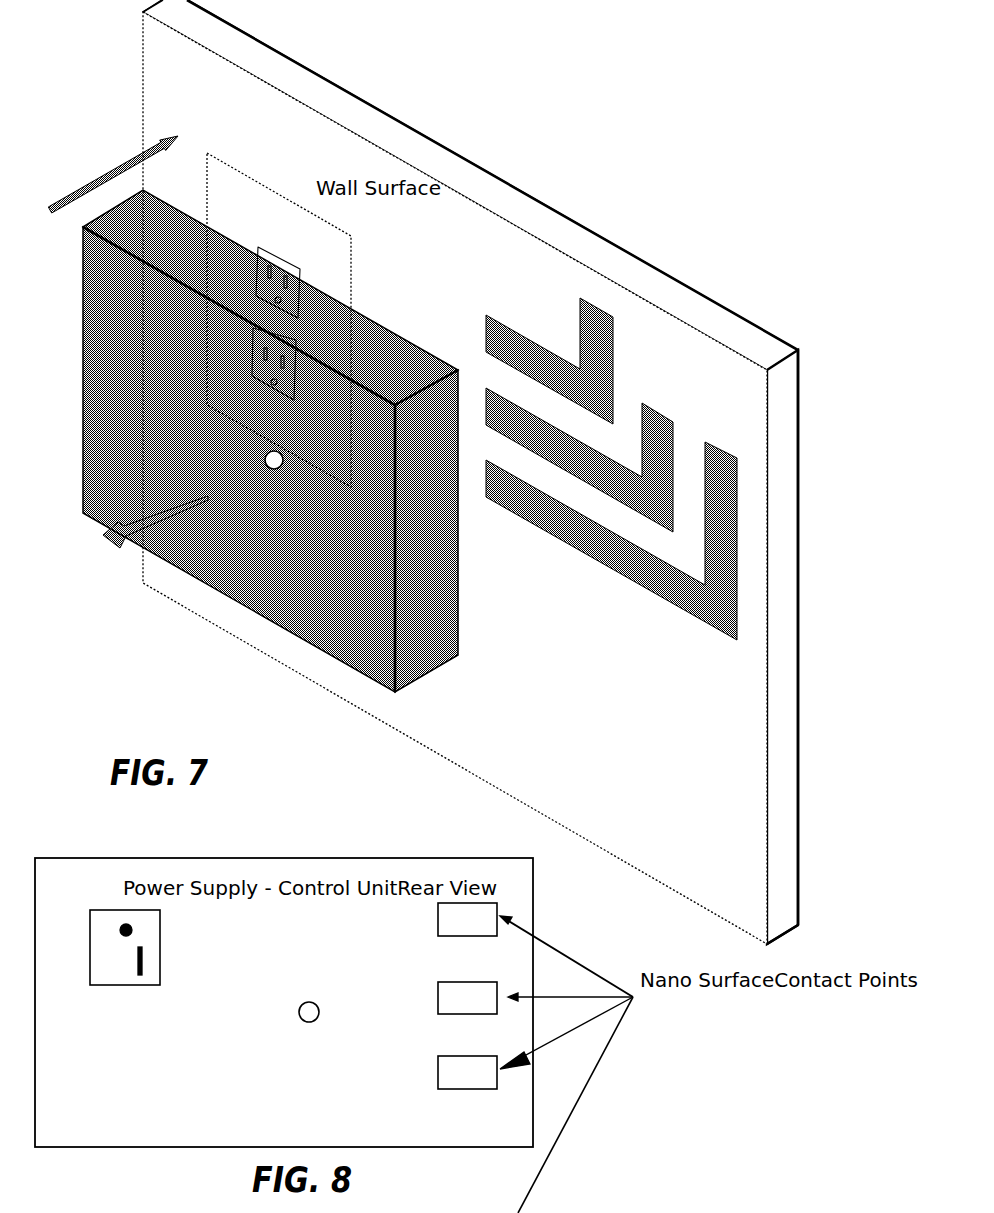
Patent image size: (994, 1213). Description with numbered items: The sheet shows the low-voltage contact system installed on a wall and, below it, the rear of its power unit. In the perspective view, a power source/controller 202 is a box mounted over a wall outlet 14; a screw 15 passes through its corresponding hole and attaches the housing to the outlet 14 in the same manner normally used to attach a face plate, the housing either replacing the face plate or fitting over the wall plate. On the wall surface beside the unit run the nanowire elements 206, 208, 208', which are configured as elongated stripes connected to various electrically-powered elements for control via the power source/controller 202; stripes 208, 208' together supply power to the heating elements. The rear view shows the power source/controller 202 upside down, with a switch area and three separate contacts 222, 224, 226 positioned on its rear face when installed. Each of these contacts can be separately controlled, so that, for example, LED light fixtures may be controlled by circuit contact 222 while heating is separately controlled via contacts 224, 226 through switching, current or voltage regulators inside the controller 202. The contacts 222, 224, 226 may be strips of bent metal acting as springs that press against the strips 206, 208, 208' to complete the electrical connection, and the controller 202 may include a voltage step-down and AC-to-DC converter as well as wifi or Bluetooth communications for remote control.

In FIG. 8, the outlet 14 is at (187, 968).
In FIG. 7, the screw 15 is at (118, 553).
In FIG. 7, the power source/controller 202 is at (433, 633).
In FIG. 8, the power source/controller 202 is at (202, 1148).
In FIG. 7, the nanowire element 206 is at (675, 606).
In FIG. 7, the nanowire element 208 is at (622, 456).
In FIG. 7, the nanowire element 208' is at (596, 361).
In FIG. 8, the contact 222 is at (438, 920).
In FIG. 8, the contact 224 is at (438, 997).
In FIG. 8, the contact 226 is at (438, 1079).